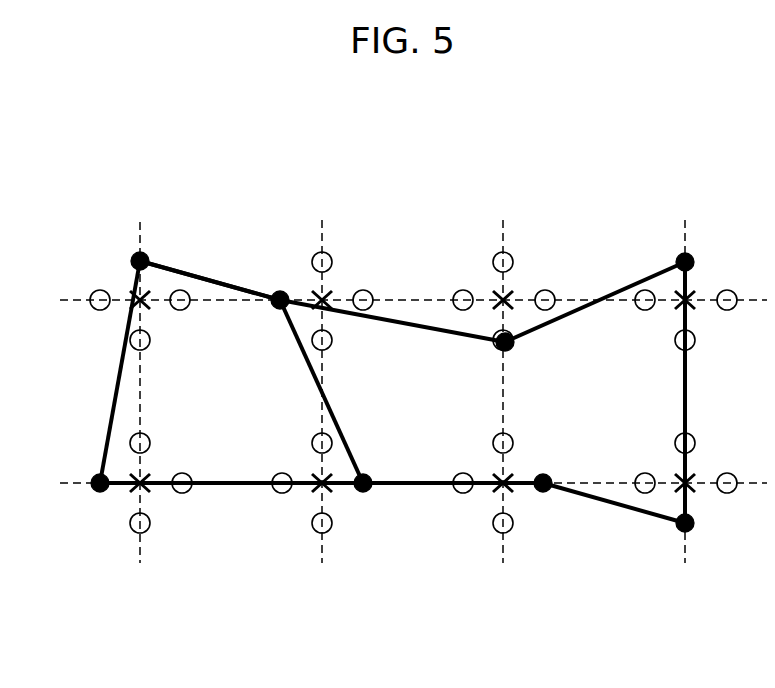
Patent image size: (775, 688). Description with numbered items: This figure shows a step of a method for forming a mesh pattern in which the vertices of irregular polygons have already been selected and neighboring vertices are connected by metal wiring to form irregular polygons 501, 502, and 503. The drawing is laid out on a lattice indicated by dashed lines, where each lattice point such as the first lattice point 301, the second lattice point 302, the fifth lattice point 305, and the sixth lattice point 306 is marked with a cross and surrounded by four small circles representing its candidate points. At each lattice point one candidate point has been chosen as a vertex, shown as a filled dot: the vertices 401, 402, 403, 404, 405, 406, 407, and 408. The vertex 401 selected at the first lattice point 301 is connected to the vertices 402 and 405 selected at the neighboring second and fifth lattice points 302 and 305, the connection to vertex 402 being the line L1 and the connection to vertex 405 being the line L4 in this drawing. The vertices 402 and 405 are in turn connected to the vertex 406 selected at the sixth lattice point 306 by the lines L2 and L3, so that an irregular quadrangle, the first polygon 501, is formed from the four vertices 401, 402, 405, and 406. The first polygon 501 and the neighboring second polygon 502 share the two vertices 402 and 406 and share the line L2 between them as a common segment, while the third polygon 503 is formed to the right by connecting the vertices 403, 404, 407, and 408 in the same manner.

The candidate point 401 is at (142, 222).
The candidate point 402 is at (279, 291).
The candidate point 403 is at (500, 334).
The candidate point 404 is at (684, 254).
The candidate point 405 is at (100, 492).
The candidate point 406 is at (366, 492).
The candidate point 407 is at (545, 492).
The candidate point 408 is at (690, 532).
The first lattice point 301 is at (150, 305).
The second lattice point 302 is at (333, 305).
The fifth lattice point 305 is at (150, 488).
The sixth lattice point 306 is at (315, 478).
The first polygon 501 is at (197, 277).
The second polygon 502 is at (400, 322).
The irregular polygon 503 is at (598, 300).
The line L1 is at (223, 282).
The line L2 is at (334, 413).
The line L3 is at (267, 487).
The line L4 is at (118, 372).